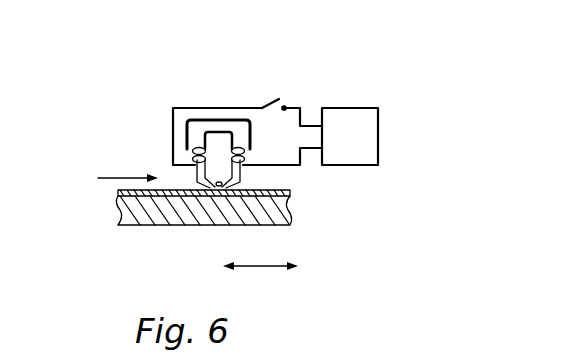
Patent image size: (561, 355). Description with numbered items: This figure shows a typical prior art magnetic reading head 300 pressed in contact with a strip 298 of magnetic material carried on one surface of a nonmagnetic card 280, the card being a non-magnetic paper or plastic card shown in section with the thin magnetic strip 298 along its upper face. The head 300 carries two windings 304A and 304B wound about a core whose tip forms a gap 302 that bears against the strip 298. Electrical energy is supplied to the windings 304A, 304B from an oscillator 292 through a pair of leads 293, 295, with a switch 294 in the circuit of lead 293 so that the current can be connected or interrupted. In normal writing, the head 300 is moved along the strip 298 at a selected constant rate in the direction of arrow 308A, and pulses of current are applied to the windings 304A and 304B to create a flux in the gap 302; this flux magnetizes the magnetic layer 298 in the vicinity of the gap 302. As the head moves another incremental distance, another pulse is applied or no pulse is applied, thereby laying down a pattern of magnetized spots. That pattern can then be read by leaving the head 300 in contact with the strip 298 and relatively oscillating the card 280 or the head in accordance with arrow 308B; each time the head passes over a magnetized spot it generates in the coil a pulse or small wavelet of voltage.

The nonmagnetic card 280 is at (114, 207).
The oscillator 292 is at (379, 135).
The lead 293 is at (205, 107).
The switch 294 is at (276, 103).
The lead 295 is at (283, 165).
The strip of magnetic material 298 is at (263, 190).
The magnetic reading head 300 is at (222, 128).
The gap 302 is at (212, 186).
The winding 304A is at (245, 155).
The winding 304B is at (193, 152).
The arrow indicating head movement 308A is at (119, 177).
The arrow indicating relative oscillation 308B is at (267, 267).